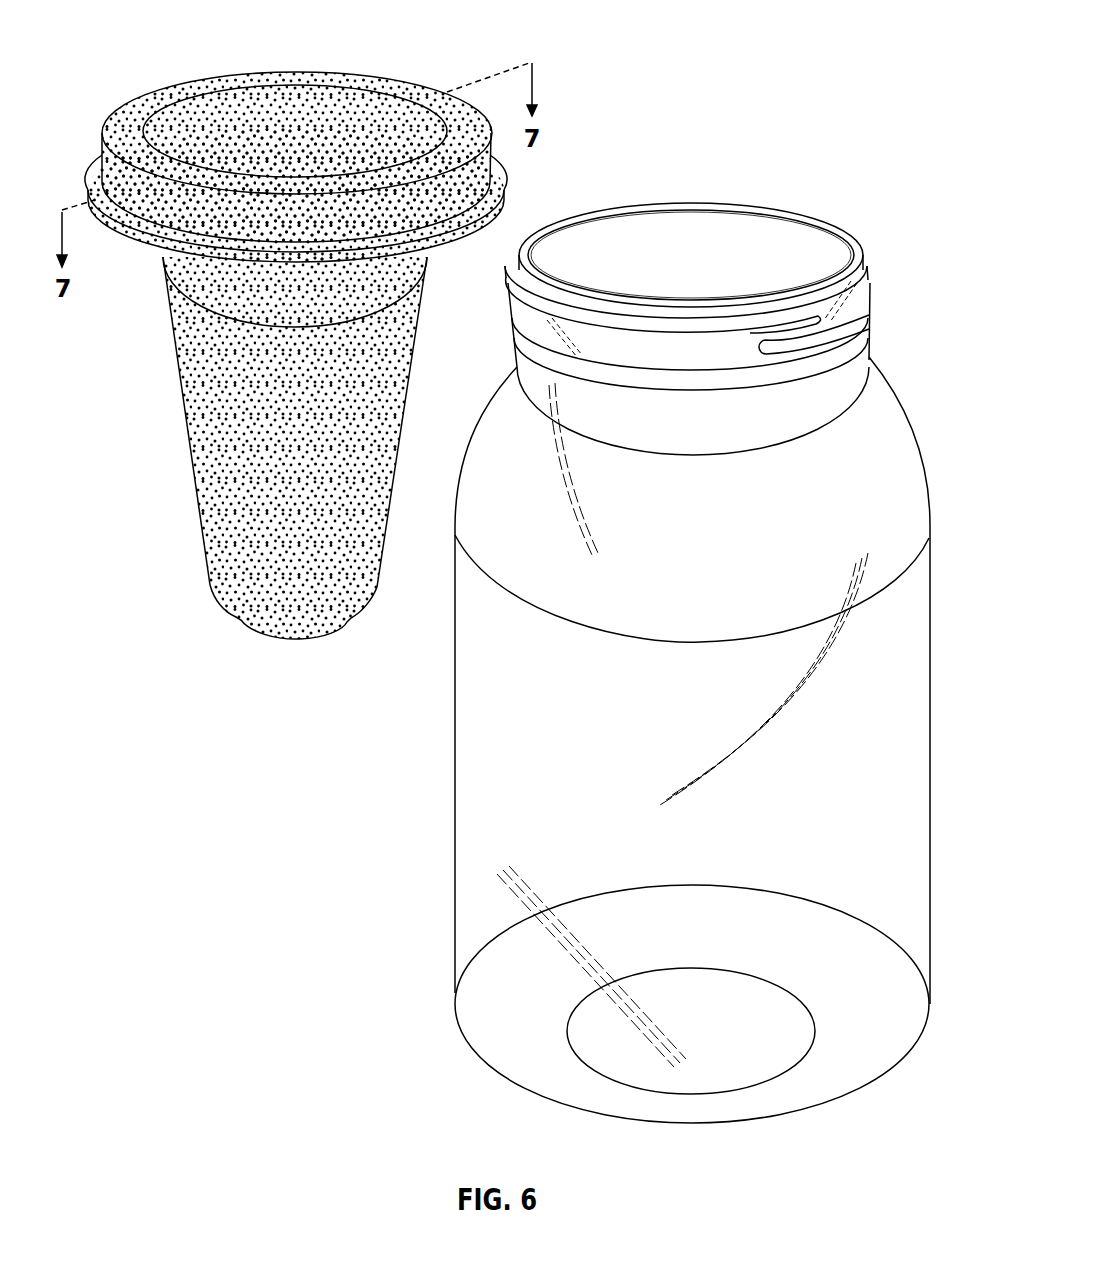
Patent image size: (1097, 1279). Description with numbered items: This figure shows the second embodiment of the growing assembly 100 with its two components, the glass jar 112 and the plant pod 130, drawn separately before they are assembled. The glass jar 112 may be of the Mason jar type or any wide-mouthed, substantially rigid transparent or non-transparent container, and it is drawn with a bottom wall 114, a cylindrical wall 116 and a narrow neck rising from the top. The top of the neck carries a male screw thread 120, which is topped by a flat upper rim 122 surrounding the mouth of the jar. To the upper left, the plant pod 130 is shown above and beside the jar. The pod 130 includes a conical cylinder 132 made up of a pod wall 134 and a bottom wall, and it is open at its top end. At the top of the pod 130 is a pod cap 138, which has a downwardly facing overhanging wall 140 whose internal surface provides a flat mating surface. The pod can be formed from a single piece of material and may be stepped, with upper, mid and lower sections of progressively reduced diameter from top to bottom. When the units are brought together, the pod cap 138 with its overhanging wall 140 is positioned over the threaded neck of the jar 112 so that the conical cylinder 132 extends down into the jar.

The growing assembly 100 is at (716, 635).
The glass jar 112 is at (748, 234).
The bottom wall 114 is at (845, 1070).
The cylindrical wall 116 is at (855, 279).
The male screw thread 120 is at (583, 303).
The flat upper rim 122 is at (857, 238).
The plant pod 130 is at (267, 448).
The conical cylinder 132 is at (237, 540).
The pod wall 134 is at (193, 345).
The pod cap 138 is at (480, 124).
The overhanging wall 140 is at (500, 184).